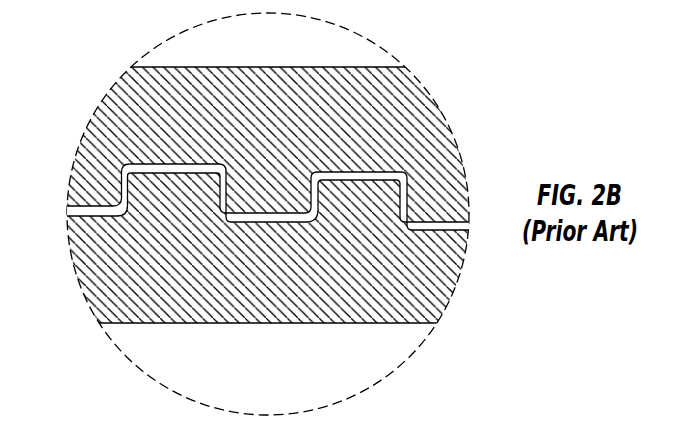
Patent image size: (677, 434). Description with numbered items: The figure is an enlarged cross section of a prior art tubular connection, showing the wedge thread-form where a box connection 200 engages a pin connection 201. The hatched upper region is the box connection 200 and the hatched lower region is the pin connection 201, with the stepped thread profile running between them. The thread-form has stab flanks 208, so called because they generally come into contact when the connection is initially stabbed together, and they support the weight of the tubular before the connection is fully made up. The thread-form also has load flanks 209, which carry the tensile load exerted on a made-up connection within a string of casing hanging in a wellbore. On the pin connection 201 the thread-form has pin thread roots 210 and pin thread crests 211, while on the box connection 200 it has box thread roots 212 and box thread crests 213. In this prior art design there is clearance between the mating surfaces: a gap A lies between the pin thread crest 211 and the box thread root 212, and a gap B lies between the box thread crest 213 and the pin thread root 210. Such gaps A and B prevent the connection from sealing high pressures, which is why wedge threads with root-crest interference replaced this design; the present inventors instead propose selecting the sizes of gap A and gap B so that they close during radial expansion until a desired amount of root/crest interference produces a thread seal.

The box connection 200 is at (254, 66).
The pin connection 201 is at (263, 324).
The stab flanks 208 is at (219, 201).
The load flanks 209 is at (126, 193).
The pin thread roots 210 is at (272, 224).
The pin thread crests 211 is at (161, 197).
The box thread roots 212 is at (172, 163).
The box thread crests 213 is at (273, 212).
The gap A is at (118, 173).
The gap B is at (338, 198).